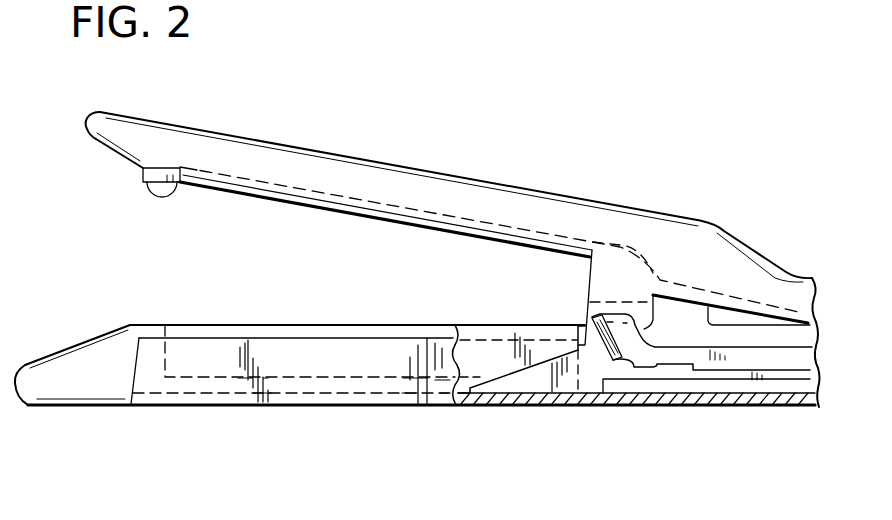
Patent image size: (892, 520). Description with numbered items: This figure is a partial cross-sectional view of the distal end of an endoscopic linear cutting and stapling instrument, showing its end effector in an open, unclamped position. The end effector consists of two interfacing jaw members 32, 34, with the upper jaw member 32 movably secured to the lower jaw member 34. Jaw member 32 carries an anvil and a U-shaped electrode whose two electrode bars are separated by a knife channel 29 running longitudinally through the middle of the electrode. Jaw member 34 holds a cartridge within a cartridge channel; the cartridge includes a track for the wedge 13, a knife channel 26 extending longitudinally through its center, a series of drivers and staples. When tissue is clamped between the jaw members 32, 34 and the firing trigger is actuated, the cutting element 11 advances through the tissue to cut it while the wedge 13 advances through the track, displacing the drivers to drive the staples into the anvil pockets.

The jaw member 32 is at (285, 147).
The knife channel 29 is at (413, 217).
The knife channel 26 is at (182, 368).
The jaw member 34 is at (395, 408).
The wedge 13 is at (543, 368).
The cutting element 11 is at (632, 340).